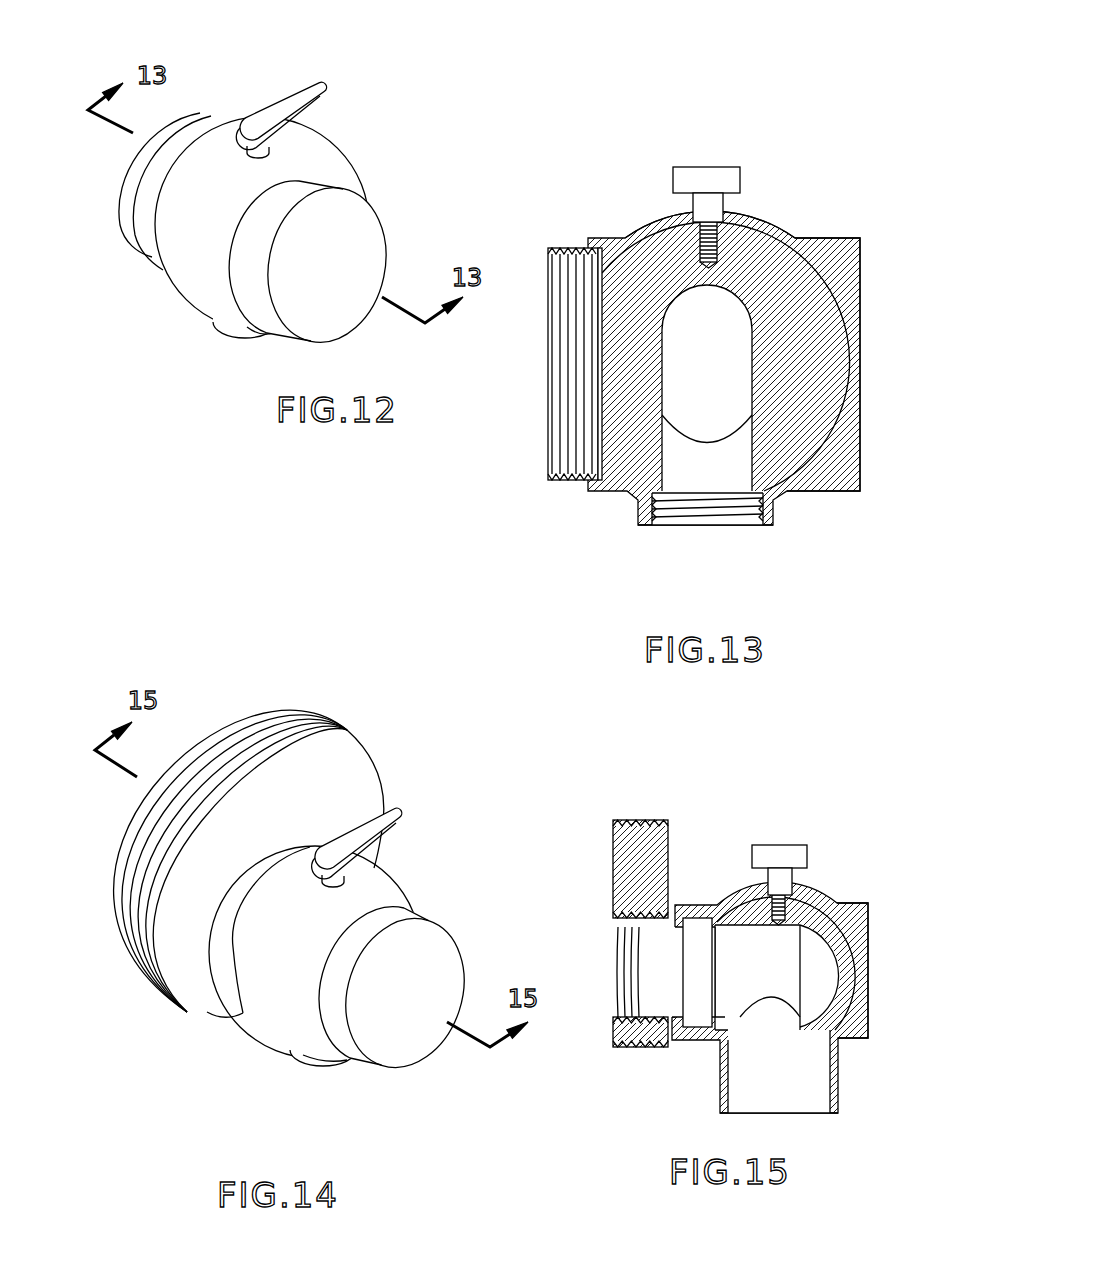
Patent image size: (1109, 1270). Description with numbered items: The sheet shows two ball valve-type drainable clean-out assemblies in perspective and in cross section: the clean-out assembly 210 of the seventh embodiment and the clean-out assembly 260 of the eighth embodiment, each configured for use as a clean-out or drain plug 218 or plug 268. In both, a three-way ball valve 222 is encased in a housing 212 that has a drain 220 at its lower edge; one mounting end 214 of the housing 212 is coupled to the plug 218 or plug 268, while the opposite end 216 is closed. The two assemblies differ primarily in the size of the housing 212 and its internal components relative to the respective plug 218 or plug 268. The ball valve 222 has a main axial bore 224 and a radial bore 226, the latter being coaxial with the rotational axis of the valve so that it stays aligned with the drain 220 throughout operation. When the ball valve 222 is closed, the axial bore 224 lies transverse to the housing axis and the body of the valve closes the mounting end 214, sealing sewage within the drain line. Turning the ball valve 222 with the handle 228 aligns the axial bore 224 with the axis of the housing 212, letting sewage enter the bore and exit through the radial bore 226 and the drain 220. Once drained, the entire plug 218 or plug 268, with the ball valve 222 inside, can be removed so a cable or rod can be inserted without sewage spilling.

In FIG. 12, the clean-out assembly 210 is at (292, 219).
In FIG. 13, the clean-out assembly 210 is at (695, 344).
In FIG. 12, the housing 212 is at (302, 140).
In FIG. 13, the housing 212 is at (753, 215).
In FIG. 14, the housing 212 is at (315, 952).
In FIG. 15, the housing 212 is at (733, 880).
In FIG. 12, the mounting end 214 is at (148, 250).
In FIG. 13, the mounting end 214 is at (565, 482).
In FIG. 14, the mounting end 214 is at (220, 980).
In FIG. 15, the mounting end 214 is at (697, 1043).
In FIG. 12, the opposite end 216 is at (357, 207).
In FIG. 13, the opposite end 216 is at (821, 491).
In FIG. 14, the opposite end 216 is at (422, 908).
In FIG. 15, the opposite end 216 is at (853, 1040).
In FIG. 13, the plug 218 is at (635, 215).
In FIG. 12, the drain 220 is at (248, 332).
In FIG. 13, the drain 220 is at (668, 513).
In FIG. 14, the drain 220 is at (332, 1063).
In FIG. 15, the drain 220 is at (720, 1087).
In FIG. 13, the ball valve 222 is at (712, 505).
In FIG. 13, the axial bore 224 is at (707, 290).
In FIG. 15, the axial bore 224 is at (732, 930).
In FIG. 13, the radial bore 226 is at (663, 468).
In FIG. 15, the radial bore 226 is at (767, 1027).
In FIG. 12, the handle 228 is at (281, 105).
In FIG. 13, the handle 228 is at (718, 172).
In FIG. 14, the handle 228 is at (387, 812).
In FIG. 15, the handle 228 is at (778, 848).
In FIG. 14, the clean-out assembly 260 is at (322, 895).
In FIG. 15, the clean-out assembly 260 is at (764, 949).
In FIG. 14, the plug 268 is at (295, 712).
In FIG. 15, the plug 268 is at (652, 815).